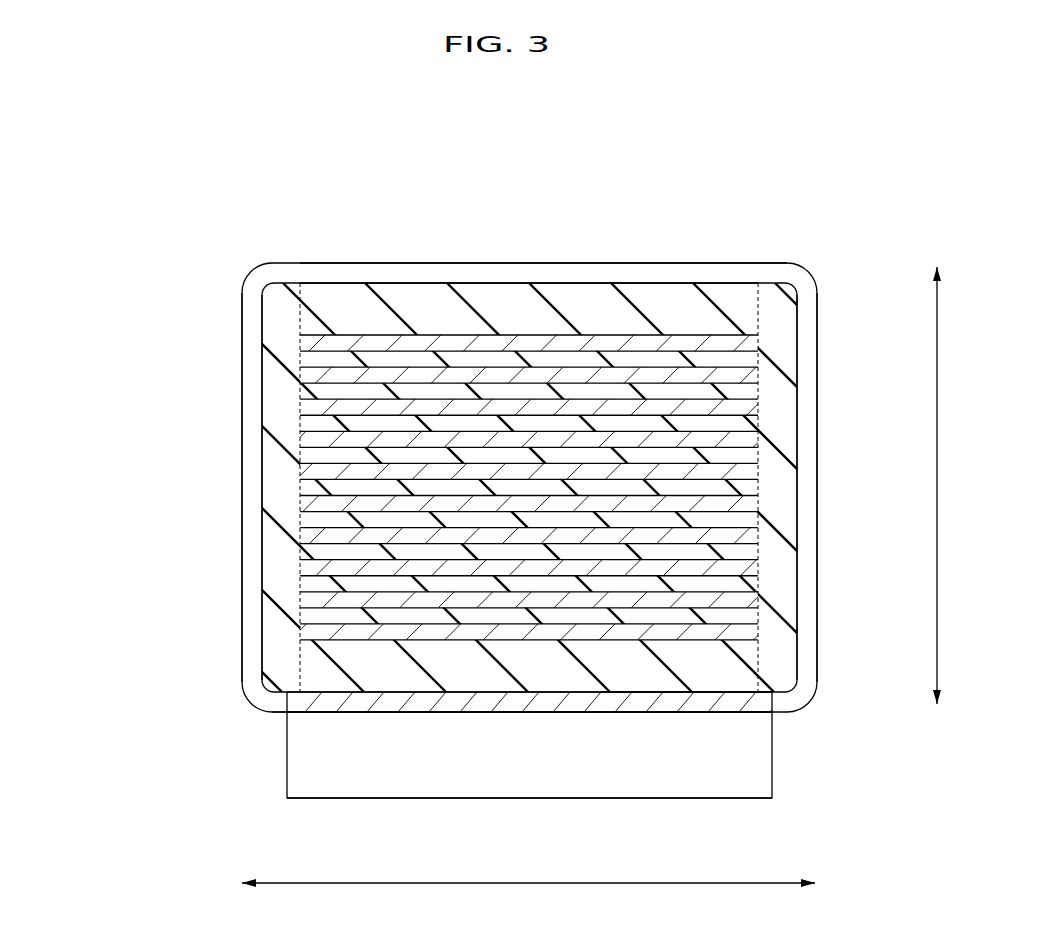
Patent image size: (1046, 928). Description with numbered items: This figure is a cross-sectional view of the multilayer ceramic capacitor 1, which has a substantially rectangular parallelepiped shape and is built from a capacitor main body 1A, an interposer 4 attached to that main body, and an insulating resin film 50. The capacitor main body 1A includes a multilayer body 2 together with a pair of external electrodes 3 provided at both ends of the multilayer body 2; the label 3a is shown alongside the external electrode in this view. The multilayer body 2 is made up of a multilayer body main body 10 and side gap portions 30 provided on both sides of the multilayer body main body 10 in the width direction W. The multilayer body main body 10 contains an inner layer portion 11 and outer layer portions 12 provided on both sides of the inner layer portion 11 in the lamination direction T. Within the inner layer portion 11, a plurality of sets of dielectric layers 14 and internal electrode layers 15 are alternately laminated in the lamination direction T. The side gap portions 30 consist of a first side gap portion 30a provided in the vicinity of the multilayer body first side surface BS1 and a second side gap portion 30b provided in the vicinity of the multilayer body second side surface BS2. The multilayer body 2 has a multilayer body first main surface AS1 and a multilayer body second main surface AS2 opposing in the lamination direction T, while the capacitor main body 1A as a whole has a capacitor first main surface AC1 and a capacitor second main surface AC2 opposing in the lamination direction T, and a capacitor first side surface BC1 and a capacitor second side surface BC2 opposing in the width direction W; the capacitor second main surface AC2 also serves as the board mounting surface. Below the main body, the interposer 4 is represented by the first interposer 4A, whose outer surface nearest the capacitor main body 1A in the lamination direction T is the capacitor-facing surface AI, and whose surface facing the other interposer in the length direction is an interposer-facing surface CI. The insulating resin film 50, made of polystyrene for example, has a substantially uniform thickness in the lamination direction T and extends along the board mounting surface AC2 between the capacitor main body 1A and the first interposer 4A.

The multilayer ceramic capacitor 1 is at (750, 220).
The capacitor main body 1A is at (365, 181).
The multilayer body 2 is at (472, 283).
The external electrodes 3 is at (397, 263).
The outer coating layer 3a is at (529, 487).
The interposer 4 is at (529, 755).
The first interposer 4A is at (453, 768).
The multilayer body main body 10 is at (95, 287).
The inner layer portion 11 is at (300, 335).
The outer layer portions 12 is at (337, 310).
The dielectric layers 14 is at (300, 395).
The internal electrode layers 15 is at (300, 345).
The side gap portions 30 is at (540, 446).
The first side gap portion 30a is at (278, 300).
The second side gap portion 30b is at (779, 300).
The insulating resin film 50 is at (763, 700).
The multilayer body first main surface AS1 is at (593, 283).
The multilayer body second main surface AS2 is at (580, 712).
The capacitor first main surface AC1 is at (665, 263).
The capacitor second main surface AC2 is at (283, 712).
The capacitor first side surface BC1 is at (242, 524).
The capacitor second side surface BC2 is at (817, 524).
The multilayer body first side surface BS1 is at (262, 568).
The multilayer body second side surface BS2 is at (797, 568).
The capacitor-facing surface AI is at (703, 698).
The interposer-facing surfaces CI is at (517, 768).
The lamination direction T is at (945, 485).
The width direction W is at (528, 896).